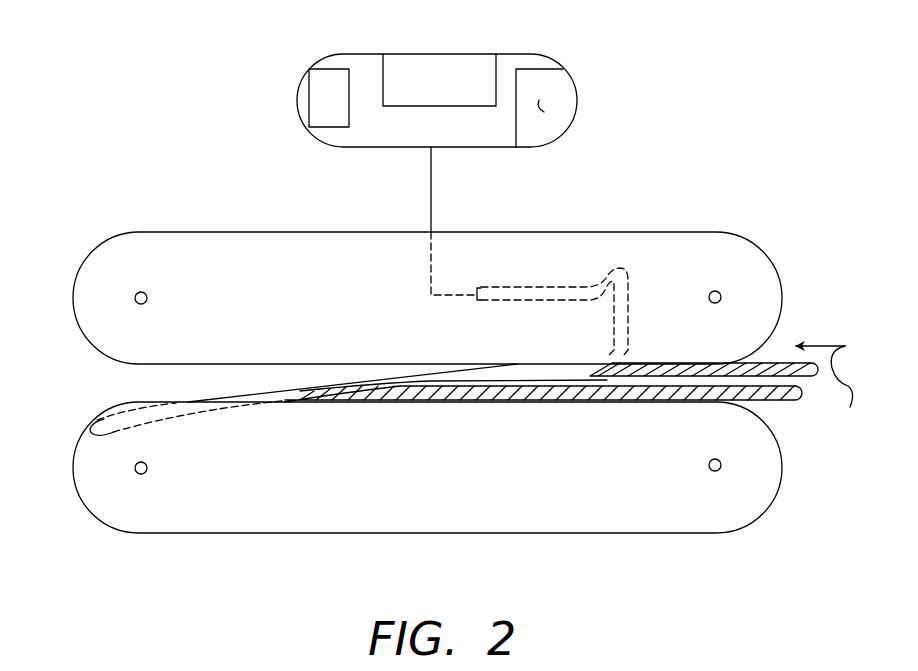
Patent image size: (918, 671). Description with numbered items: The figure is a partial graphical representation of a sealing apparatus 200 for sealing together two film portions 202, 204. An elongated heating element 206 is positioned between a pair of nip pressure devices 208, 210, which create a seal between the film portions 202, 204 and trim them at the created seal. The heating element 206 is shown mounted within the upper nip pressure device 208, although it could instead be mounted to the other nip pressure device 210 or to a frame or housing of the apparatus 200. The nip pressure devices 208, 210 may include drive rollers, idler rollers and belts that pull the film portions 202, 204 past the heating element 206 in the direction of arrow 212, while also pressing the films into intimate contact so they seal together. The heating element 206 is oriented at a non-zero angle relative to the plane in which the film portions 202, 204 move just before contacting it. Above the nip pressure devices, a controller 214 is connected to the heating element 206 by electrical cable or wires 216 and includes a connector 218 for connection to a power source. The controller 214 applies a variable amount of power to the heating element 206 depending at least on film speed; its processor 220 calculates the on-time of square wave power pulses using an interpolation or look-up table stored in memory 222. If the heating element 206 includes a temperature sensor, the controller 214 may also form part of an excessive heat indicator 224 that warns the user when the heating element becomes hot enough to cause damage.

The sealing apparatus 200 is at (716, 87).
The film portion 202 is at (767, 360).
The film portion 204 is at (764, 401).
The heating element 206 is at (545, 287).
The nip pressure device 208 is at (230, 232).
The nip pressure device 210 is at (217, 533).
The arrow 212 is at (824, 384).
The controller 214 is at (335, 54).
The electrical cable or wires 216 is at (428, 279).
The connector 218 is at (333, 127).
The processor 220 is at (442, 106).
The memory 222 is at (541, 67).
The excessive heat indicator 224 is at (544, 112).